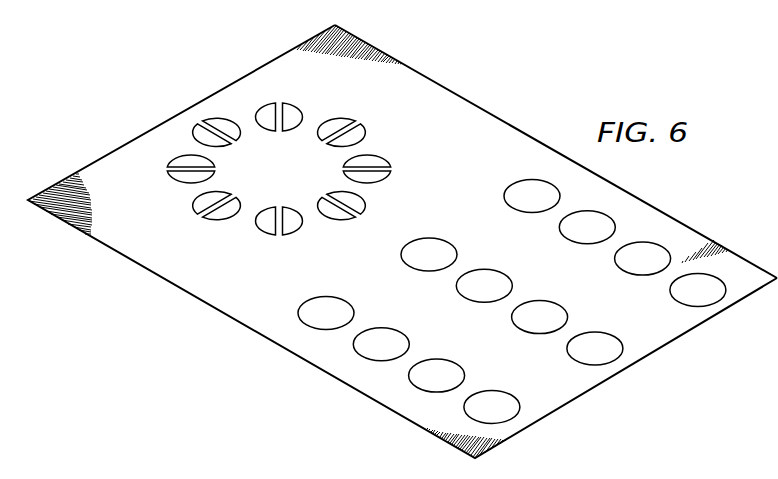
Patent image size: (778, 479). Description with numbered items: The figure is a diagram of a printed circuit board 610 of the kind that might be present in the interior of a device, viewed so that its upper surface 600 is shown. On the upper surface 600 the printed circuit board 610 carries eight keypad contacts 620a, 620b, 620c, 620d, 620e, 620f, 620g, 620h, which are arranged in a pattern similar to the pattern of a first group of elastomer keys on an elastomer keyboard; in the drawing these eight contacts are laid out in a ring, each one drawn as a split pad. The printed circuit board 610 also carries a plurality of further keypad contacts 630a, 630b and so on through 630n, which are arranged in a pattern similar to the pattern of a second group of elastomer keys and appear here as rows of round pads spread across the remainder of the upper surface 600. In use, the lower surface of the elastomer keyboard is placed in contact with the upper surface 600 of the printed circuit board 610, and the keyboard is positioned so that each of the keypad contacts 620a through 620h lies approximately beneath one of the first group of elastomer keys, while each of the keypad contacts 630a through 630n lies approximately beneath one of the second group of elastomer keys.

The upper surface 600 is at (512, 137).
The printed circuit board 610 is at (667, 213).
The keypad contact 620a is at (218, 121).
The keypad contact 620b is at (292, 110).
The keypad contact 620c is at (380, 113).
The keypad contact 620d is at (393, 162).
The keypad contact 620e is at (365, 200).
The keypad contact 620f is at (260, 225).
The keypad contact 620g is at (197, 201).
The keypad contact 620h is at (170, 175).
The keypad contact 630a is at (325, 303).
The keypad contact 630b is at (380, 335).
The keypad contact 630n is at (685, 298).